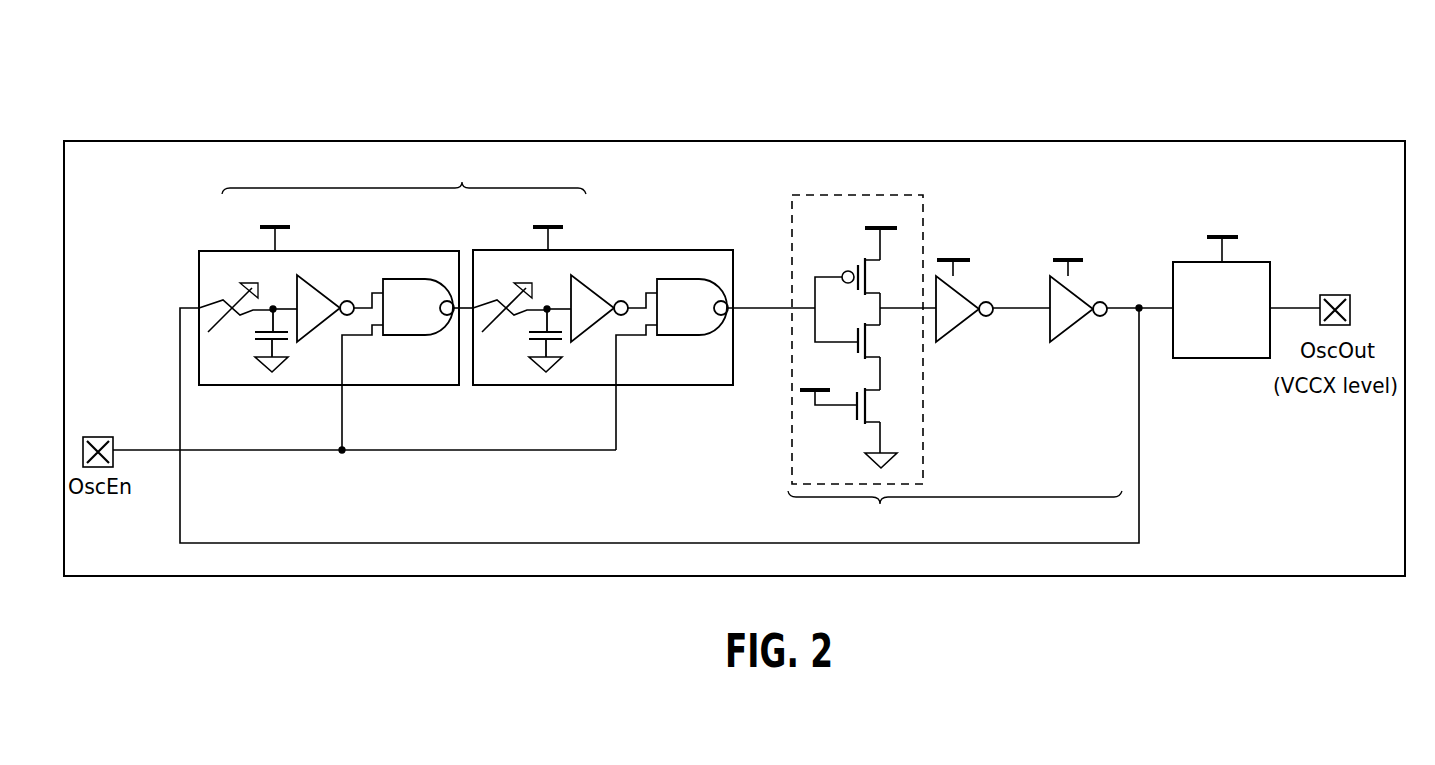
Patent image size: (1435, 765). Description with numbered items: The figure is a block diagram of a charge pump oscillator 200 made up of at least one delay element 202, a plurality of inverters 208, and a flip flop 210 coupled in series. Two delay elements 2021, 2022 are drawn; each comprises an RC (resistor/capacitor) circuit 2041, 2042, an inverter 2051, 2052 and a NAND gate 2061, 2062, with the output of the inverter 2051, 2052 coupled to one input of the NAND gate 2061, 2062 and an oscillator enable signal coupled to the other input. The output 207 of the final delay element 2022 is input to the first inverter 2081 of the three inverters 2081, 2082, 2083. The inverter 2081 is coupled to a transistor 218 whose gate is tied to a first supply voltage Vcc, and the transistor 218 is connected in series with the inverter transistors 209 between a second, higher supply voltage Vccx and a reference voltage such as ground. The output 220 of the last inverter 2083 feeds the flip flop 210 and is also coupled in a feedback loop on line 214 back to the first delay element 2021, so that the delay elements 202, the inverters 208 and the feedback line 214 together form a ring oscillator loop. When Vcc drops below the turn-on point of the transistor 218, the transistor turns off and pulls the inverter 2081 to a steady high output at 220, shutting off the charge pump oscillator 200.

The charge pump oscillator 200 is at (1155, 82).
The delay element 202 is at (417, 303).
The first delay element 2021 is at (280, 325).
The final delay element 2022 is at (573, 325).
The RC circuit 2041 is at (253, 335).
The RC circuit 2042 is at (527, 335).
The inverter 2051 is at (337, 274).
The inverter 2052 is at (587, 284).
The NAND gate 2061 is at (410, 337).
The NAND gate 2062 is at (676, 337).
The output 207 is at (767, 313).
The plurality of inverters 208 is at (980, 347).
The inverter 2081 is at (892, 320).
The inverter 2082 is at (972, 287).
The inverter 2083 is at (1100, 277).
The inverter transistors 209 is at (877, 280).
The flip flop 210 is at (1257, 262).
The feedback line 214 is at (517, 543).
The transistor 218 is at (887, 422).
The output 220 is at (928, 310).